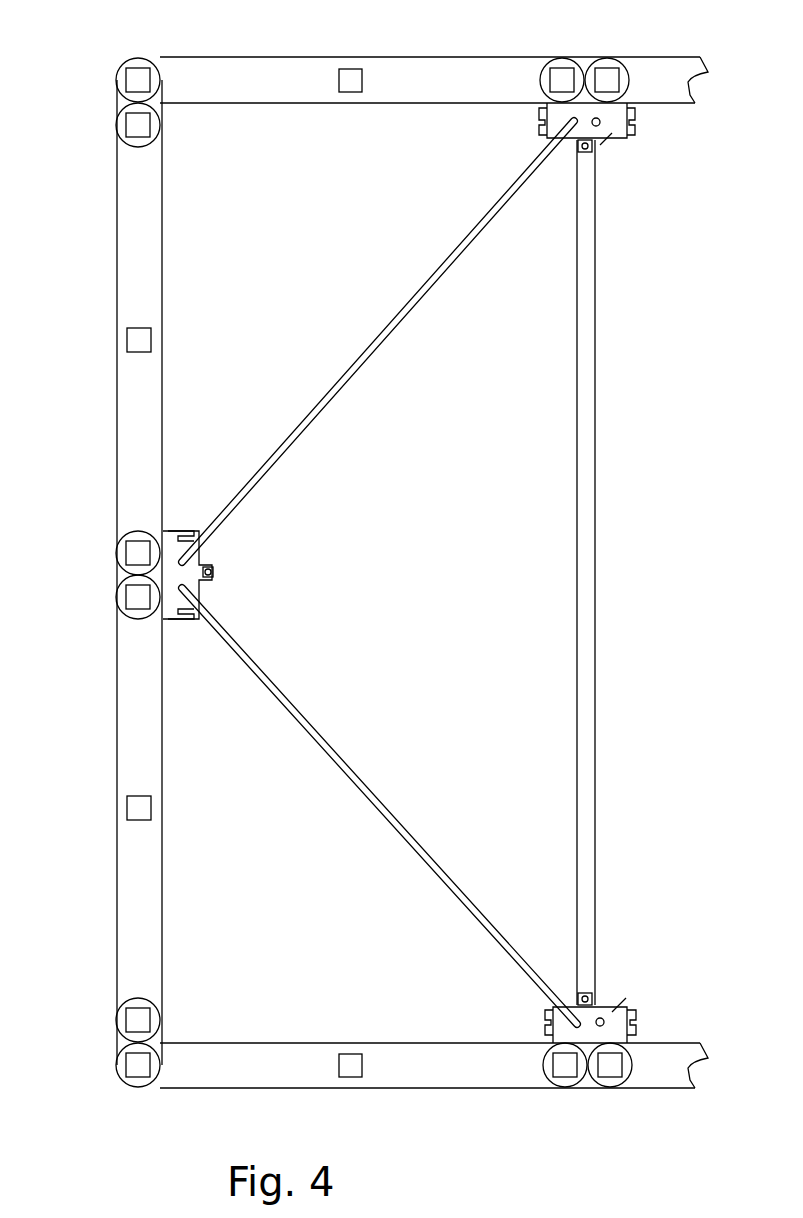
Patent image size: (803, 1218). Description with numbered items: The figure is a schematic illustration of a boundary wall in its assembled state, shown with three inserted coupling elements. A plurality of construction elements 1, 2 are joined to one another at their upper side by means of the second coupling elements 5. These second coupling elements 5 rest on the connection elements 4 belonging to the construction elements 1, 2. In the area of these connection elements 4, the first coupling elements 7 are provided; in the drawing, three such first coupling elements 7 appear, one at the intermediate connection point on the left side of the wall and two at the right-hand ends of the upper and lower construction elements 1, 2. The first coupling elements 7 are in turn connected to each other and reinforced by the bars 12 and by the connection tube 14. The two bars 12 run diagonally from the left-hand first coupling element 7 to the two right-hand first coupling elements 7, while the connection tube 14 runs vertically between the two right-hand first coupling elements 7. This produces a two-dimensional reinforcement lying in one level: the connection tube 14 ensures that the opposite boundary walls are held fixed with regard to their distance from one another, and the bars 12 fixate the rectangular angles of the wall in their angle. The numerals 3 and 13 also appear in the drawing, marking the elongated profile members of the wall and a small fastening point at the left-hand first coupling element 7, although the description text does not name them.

The construction element 1 is at (100, 278).
The construction element 2 is at (100, 718).
The profile bar 3 is at (148, 279).
The connection element 4 is at (128, 556).
The second coupling element 5 is at (137, 103).
The first coupling element 7 is at (178, 538).
The bar 12 is at (253, 488).
The bolt 13 is at (215, 572).
The connection tube 14 is at (583, 545).